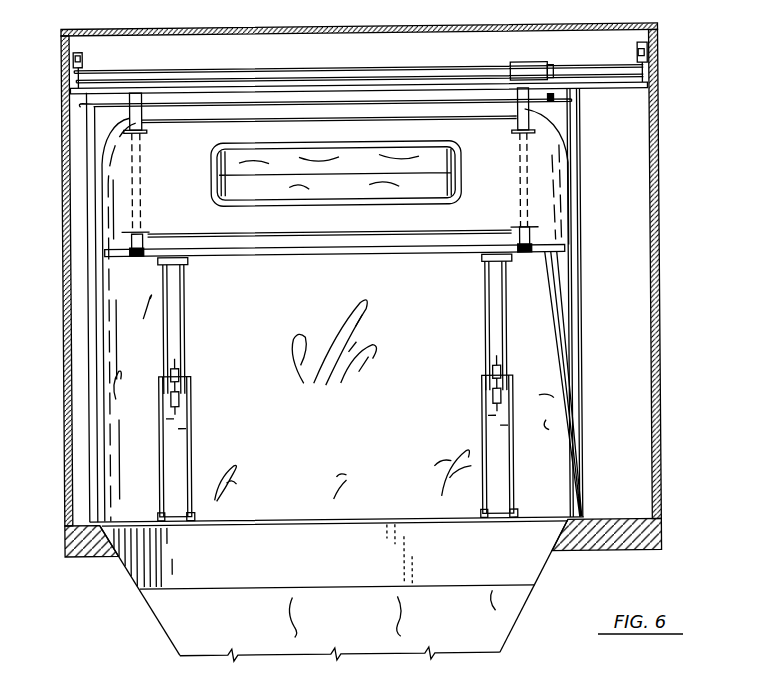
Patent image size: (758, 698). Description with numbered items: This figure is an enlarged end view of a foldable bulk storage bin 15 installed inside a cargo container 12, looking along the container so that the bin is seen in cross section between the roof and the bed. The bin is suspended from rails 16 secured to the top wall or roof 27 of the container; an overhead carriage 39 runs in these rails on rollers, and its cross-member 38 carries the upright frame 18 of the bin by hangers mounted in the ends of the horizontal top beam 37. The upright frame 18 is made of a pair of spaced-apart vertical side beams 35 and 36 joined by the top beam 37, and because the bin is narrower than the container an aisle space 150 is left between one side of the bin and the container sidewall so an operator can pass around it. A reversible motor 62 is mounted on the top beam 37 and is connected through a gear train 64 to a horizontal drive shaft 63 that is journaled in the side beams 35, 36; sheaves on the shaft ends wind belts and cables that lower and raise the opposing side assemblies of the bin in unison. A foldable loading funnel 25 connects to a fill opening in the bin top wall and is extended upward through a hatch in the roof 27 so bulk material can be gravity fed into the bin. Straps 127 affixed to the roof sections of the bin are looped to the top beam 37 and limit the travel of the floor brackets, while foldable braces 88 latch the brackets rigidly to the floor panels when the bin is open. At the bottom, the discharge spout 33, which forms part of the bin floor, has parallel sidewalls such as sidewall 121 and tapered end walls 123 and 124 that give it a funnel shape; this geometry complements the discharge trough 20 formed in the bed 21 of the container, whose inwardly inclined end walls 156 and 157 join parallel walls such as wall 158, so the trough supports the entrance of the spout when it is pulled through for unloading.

The cargo container 12 is at (384, 278).
The top wall or roof 27 is at (203, 29).
The bed 21 is at (612, 518).
The cross-member 38 is at (313, 68).
The horizontal top beam 37 is at (263, 80).
The overhead carriage 39 is at (398, 61).
The rails 16 is at (89, 56).
The reversible motor 62 is at (528, 62).
The horizontal drive shaft 63 is at (195, 100).
The foldable bulk storage bin 15 is at (599, 209).
The aisle space 150 is at (370, 289).
The gear train 64 is at (564, 112).
The straps 127 is at (528, 170).
The vertical side beam 36 is at (88, 191).
The upright frame 18 is at (598, 395).
The vertical side beam 35 is at (580, 290).
The foldable loading funnel 25 is at (235, 160).
The foldable braces 88 is at (201, 432).
The discharge trough 20 is at (335, 598).
The tapered end wall 124 is at (160, 628).
The inwardly inclined end wall 156 is at (553, 568).
The tapered end wall 123 is at (521, 622).
The parallel wall 158 is at (336, 556).
The inwardly inclined end wall 157 is at (130, 585).
The discharge spout 33 is at (514, 652).
The parallel sidewall 121 is at (392, 613).